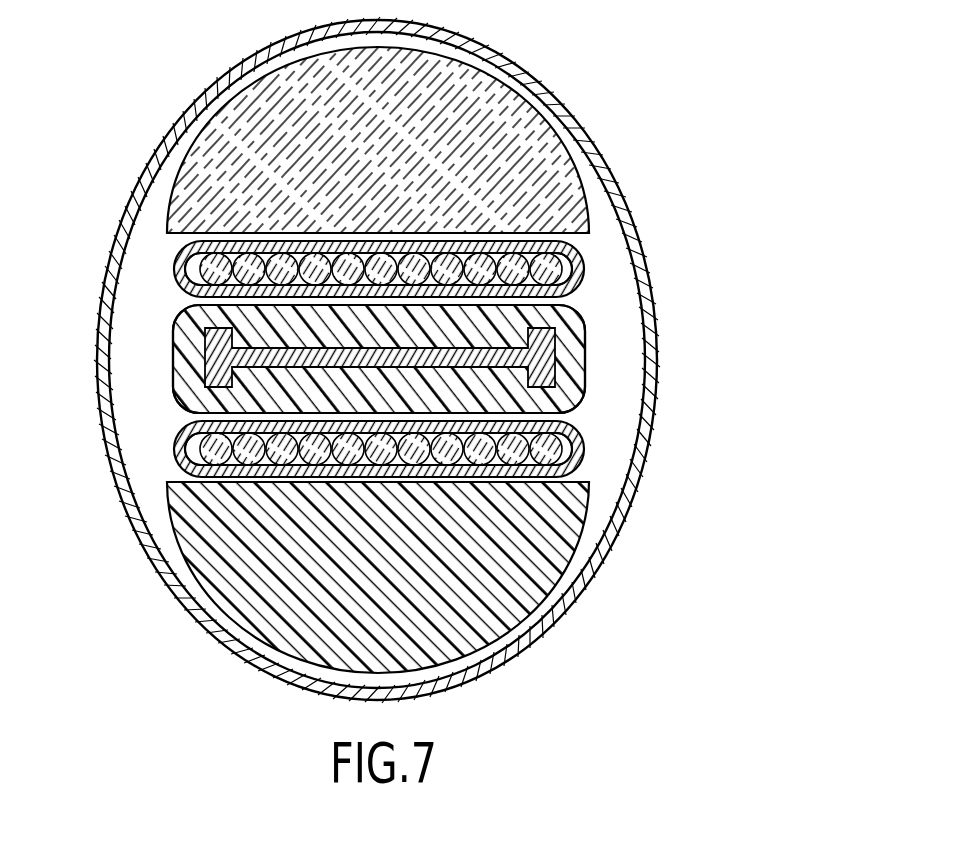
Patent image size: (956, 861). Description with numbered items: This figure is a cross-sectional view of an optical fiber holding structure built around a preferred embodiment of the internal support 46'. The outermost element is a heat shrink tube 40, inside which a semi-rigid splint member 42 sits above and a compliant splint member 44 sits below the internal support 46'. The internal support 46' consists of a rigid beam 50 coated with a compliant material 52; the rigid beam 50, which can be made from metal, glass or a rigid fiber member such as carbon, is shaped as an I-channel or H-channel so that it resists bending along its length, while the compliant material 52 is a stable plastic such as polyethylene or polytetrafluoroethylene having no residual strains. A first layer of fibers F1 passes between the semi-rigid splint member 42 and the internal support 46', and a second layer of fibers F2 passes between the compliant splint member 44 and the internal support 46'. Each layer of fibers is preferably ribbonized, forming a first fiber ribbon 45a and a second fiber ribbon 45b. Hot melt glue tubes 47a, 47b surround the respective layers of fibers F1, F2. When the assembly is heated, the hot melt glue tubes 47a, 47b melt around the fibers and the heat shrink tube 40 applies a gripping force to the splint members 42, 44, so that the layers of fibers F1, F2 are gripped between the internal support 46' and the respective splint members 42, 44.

The heat shrink tube 40 is at (540, 82).
The semi-rigid splint member 42 is at (576, 183).
The compliant splint member 44 is at (585, 563).
The first fiber ribbon 45a is at (608, 268).
The second fiber ribbon 45b is at (608, 471).
The internal support 46' is at (465, 367).
The rigid beam 50 is at (584, 316).
The compliant material 52 is at (586, 367).
The hot melt glue tube 47a is at (176, 270).
The hot melt glue tube 47b is at (176, 448).
The first layer of fibers F1 is at (183, 296).
The second layer of fibers F2 is at (203, 453).